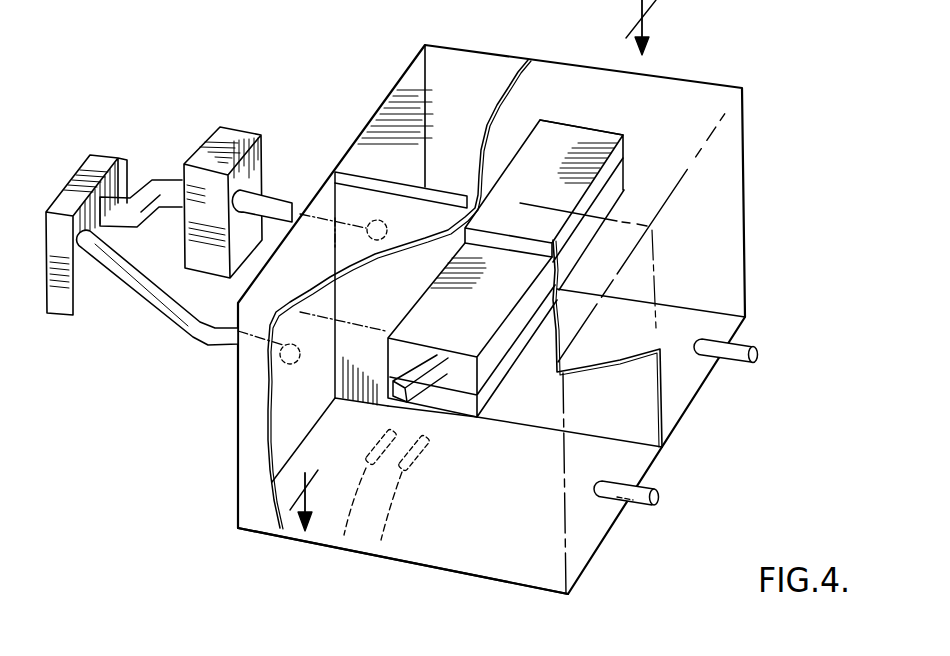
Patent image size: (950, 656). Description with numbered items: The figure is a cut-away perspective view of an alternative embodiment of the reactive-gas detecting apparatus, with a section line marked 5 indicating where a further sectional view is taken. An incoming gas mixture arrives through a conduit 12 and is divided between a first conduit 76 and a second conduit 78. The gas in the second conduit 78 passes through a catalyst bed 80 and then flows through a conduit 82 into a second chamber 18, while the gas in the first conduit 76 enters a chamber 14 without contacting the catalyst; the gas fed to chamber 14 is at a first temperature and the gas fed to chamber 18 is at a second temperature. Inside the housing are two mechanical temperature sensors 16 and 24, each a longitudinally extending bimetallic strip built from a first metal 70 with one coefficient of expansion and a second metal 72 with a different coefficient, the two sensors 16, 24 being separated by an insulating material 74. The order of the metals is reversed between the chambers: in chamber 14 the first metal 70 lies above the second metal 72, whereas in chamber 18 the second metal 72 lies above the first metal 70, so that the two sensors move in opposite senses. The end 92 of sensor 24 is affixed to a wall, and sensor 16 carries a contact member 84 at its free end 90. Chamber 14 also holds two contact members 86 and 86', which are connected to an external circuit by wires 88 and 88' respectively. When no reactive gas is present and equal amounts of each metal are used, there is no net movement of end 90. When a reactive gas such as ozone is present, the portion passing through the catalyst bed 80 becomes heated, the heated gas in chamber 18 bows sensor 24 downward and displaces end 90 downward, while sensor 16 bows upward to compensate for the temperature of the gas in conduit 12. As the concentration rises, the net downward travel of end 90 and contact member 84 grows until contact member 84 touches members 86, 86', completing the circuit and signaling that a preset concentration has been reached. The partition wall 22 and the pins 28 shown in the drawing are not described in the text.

The conduit 12 is at (100, 154).
The chamber 14 is at (300, 550).
The mechanical temperature sensor 16 is at (517, 428).
The second chamber 18 is at (397, 102).
The partition wall 22 is at (348, 337).
The mechanical temperature sensor 24 is at (626, 170).
The mounting pins 28 is at (730, 362).
The first metal 70 is at (512, 315).
The second metal 72 is at (500, 378).
The insulating material 74 is at (506, 233).
The first conduit 76 is at (203, 346).
The second conduit 78 is at (160, 182).
The catalyst bed 80 is at (233, 137).
The conduit 82 is at (290, 198).
The contact member 84 is at (424, 358).
The contact member 86 is at (440, 463).
The contact member 86' is at (360, 447).
The wire 88 is at (376, 554).
The wire 88' is at (324, 552).
The end 90 is at (445, 422).
The end 92 is at (607, 124).
The section line 5- 5 is at (469, 265).